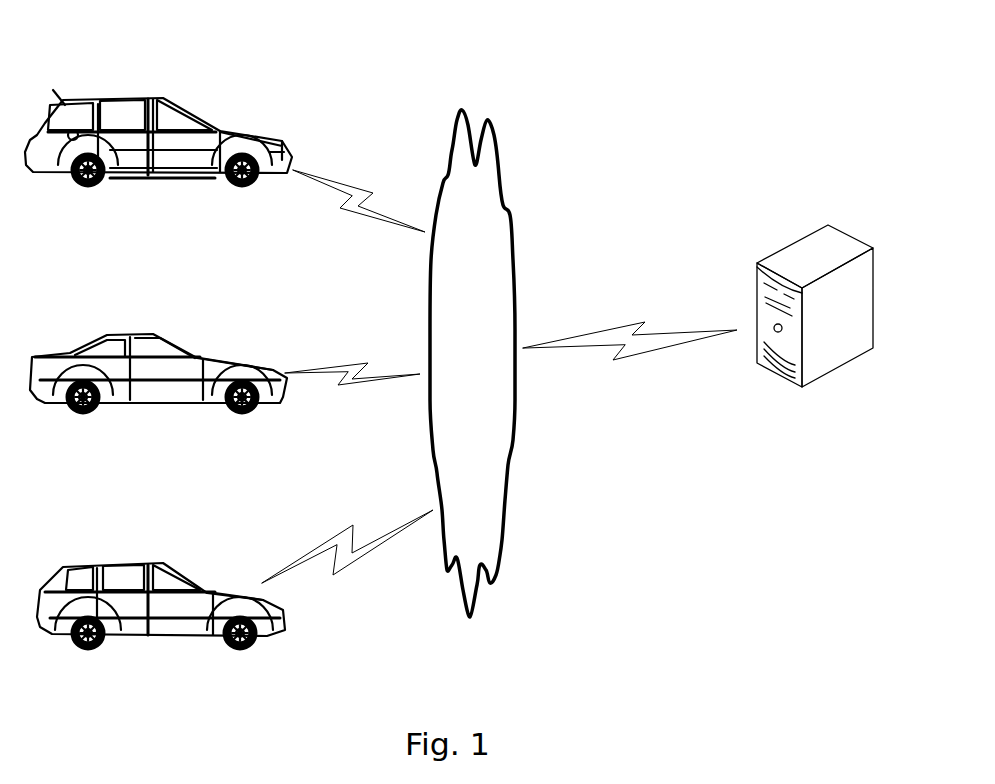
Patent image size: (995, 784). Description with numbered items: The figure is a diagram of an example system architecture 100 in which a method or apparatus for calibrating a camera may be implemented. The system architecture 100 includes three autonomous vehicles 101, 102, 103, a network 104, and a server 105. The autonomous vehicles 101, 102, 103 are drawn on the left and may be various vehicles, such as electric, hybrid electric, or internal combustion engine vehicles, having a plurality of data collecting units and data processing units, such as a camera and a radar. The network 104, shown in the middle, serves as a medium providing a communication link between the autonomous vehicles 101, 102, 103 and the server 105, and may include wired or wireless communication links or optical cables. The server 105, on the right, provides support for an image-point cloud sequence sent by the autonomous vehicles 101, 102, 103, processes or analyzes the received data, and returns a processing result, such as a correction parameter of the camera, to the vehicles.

The system architecture 100 is at (806, 56).
The autonomous vehicle 101 is at (202, 112).
The autonomous vehicle 102 is at (210, 330).
The autonomous vehicle 103 is at (205, 578).
The network 104 is at (518, 262).
The server 105 is at (767, 375).